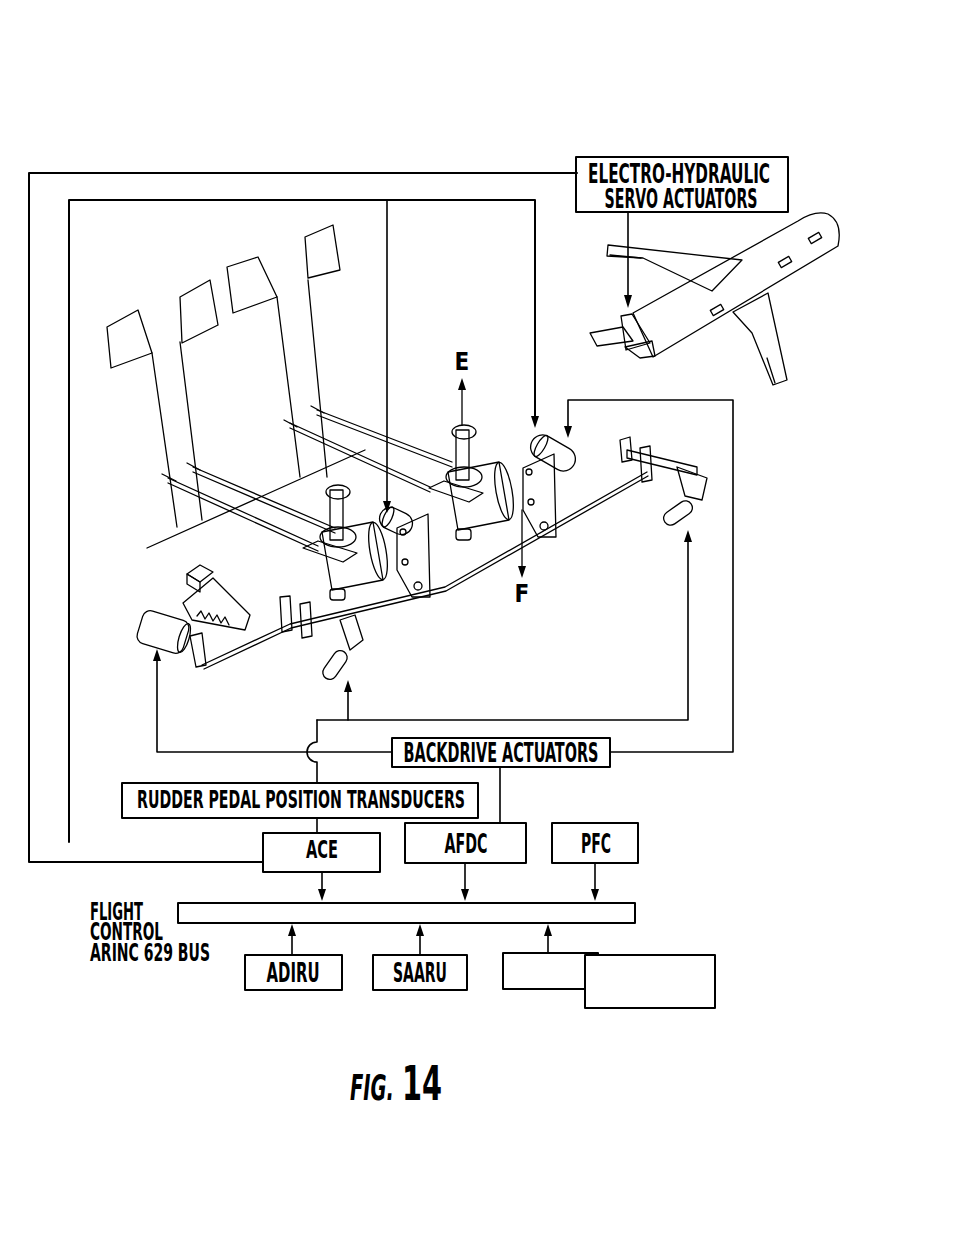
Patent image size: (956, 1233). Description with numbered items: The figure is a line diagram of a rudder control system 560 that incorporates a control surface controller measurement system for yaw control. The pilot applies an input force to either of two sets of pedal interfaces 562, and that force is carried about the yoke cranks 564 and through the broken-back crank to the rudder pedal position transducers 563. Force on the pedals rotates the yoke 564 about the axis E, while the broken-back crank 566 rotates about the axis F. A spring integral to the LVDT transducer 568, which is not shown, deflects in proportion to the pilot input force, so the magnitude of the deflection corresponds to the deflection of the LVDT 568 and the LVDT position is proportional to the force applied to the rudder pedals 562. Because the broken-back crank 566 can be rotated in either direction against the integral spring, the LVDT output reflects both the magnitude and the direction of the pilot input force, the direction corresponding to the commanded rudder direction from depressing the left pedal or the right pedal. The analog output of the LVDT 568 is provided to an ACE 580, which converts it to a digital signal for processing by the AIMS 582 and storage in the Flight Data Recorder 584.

The rudder control system 560 is at (486, 117).
The pedal interfaces 562 is at (123, 302).
The rudder pedal position transducers 563 is at (349, 672).
The yoke crank 564 is at (312, 548).
The broken-back crank 566 is at (447, 487).
The LVDT transducer 568 is at (380, 510).
The ACE 580 is at (273, 873).
The AIMS 582 is at (542, 990).
The Flight Data Recorder 584 is at (664, 1008).